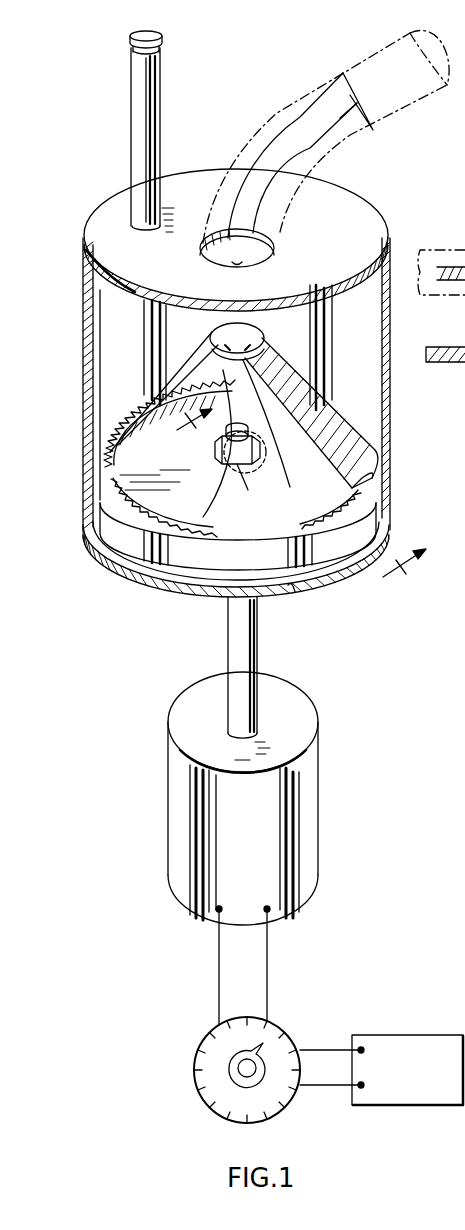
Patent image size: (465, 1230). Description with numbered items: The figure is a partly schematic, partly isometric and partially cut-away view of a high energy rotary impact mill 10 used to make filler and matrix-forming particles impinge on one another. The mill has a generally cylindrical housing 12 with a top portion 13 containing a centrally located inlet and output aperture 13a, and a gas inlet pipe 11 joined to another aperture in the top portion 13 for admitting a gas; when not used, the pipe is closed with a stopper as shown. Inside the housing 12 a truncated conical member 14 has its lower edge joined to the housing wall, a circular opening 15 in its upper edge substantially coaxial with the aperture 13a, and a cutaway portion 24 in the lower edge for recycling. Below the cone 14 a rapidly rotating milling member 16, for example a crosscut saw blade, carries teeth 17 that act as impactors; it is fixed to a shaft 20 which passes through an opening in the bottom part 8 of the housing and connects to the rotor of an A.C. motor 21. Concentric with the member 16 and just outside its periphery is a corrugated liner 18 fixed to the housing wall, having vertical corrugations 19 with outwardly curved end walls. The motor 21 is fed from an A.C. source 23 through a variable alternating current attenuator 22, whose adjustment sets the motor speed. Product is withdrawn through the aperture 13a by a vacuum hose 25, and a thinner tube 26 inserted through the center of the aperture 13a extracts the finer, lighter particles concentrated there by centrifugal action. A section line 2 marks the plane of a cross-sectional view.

The section line 2- 2 is at (292, 504).
The bottom part 8 is at (292, 590).
The high energy rotary impact mill 10 is at (78, 366).
The gas inlet pipe 11 is at (136, 122).
The cylindrical housing 12 is at (97, 447).
The top portion 13 is at (110, 220).
The inlet and output aperture 13a is at (266, 237).
The truncated conical member 14 is at (355, 445).
The circular opening 15 is at (242, 334).
The rotating milling member 16 is at (137, 470).
The teeth 17 is at (110, 462).
The corrugated liner 18 is at (128, 526).
The vertical corrugations 19 is at (137, 542).
The shaft 20 is at (228, 632).
The motor 21 is at (170, 790).
The variable alternating current attenuator 22 is at (205, 1040).
The A.C. source 23 is at (376, 1035).
The cutaway portion 24 is at (362, 478).
The vacuum hose 25 is at (405, 117).
The thinner tube 26 is at (307, 117).